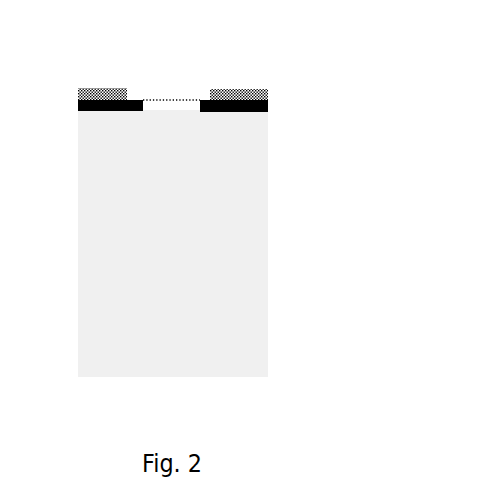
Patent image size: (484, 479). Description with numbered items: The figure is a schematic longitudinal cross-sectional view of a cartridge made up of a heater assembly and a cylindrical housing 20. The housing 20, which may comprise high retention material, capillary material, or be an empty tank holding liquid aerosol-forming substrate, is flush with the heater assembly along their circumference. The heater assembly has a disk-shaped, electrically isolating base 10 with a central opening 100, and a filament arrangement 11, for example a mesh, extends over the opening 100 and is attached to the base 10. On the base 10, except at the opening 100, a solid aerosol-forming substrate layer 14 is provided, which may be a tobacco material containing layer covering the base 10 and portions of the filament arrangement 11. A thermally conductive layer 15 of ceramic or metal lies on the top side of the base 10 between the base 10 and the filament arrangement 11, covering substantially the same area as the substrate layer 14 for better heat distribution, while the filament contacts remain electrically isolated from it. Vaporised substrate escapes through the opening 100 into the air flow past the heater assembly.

The central opening 100 is at (174, 203).
The base 10 is at (174, 140).
The filament arrangement 11 is at (146, 80).
The aerosol-forming substrate layer 14 is at (77, 98).
The thermally conductive layer 15 is at (82, 112).
The housing 20 is at (170, 245).